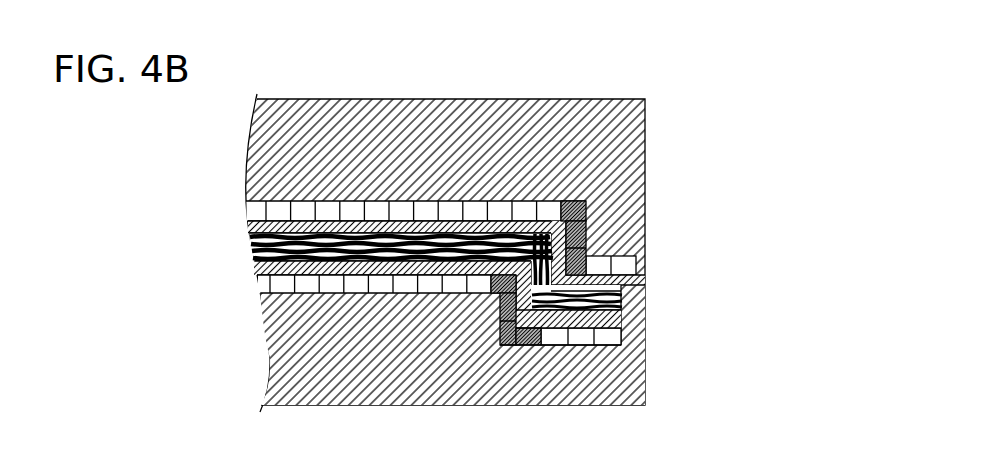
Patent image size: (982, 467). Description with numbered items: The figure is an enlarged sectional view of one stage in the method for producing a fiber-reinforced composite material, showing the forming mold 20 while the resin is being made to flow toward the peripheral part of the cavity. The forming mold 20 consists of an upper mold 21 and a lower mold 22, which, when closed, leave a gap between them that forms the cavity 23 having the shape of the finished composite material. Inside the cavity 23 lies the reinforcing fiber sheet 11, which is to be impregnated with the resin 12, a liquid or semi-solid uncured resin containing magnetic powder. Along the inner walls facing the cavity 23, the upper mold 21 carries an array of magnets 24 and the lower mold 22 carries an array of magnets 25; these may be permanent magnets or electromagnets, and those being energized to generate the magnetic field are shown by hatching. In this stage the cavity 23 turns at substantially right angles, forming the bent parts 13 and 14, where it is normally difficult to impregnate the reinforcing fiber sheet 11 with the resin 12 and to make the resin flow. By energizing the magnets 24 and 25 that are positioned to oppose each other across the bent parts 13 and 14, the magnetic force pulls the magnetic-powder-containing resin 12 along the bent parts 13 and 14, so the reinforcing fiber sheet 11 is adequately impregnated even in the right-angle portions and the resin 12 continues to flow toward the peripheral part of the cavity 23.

The forming mold 20 is at (681, 72).
The upper mold 21 is at (640, 133).
The lower mold 22 is at (637, 358).
The magnets 24 is at (438, 205).
The magnets 25 is at (425, 284).
The reinforcing fiber sheet 11 is at (364, 221).
The resin 12 is at (496, 226).
The bent part 13 is at (546, 222).
The bent part 14 is at (528, 308).
The cavity 23 is at (615, 292).